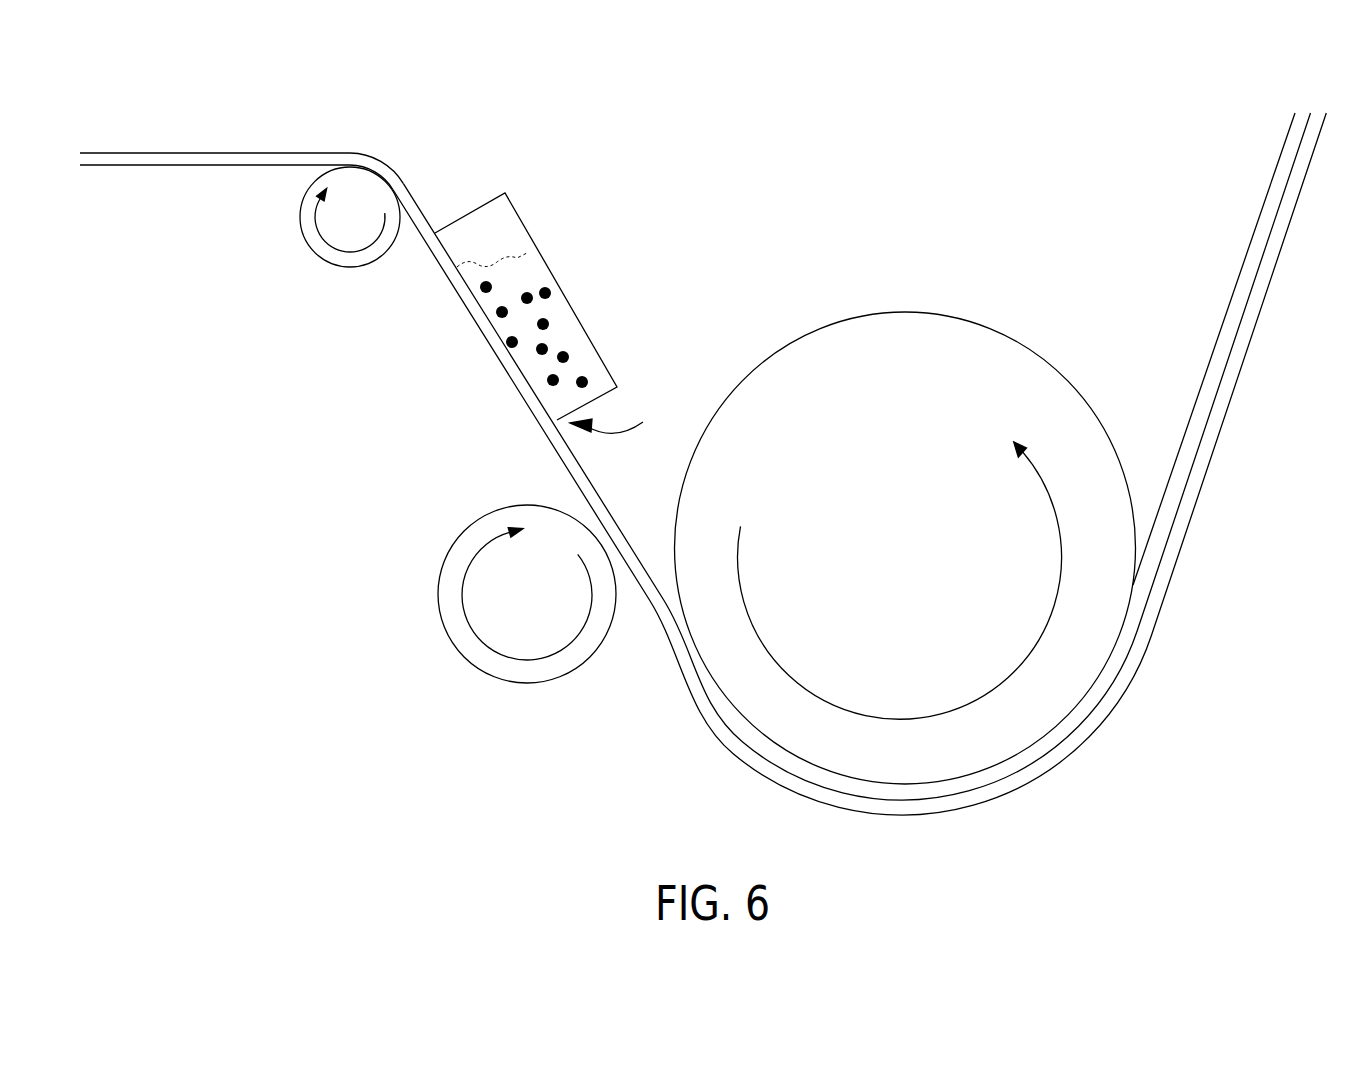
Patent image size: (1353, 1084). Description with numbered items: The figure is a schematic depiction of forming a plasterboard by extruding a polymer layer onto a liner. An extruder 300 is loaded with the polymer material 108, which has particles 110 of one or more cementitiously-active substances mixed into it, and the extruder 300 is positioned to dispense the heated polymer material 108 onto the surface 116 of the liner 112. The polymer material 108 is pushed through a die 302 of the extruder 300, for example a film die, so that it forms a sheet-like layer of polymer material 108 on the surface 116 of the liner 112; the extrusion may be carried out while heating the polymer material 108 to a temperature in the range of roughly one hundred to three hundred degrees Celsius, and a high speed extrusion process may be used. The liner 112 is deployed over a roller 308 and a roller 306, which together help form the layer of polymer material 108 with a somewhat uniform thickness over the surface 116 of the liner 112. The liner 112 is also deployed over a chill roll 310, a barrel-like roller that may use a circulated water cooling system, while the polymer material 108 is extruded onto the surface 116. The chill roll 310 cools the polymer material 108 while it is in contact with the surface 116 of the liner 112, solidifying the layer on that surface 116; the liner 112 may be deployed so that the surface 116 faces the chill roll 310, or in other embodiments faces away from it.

The polymer material 108 is at (517, 254).
The particles 110 is at (565, 353).
The liner 112 is at (250, 160).
The surface 116 is at (348, 152).
The extruder 300 is at (482, 207).
The die 302 is at (631, 412).
The roller 306 is at (553, 605).
The roller 308 is at (378, 227).
The chill roll 310 is at (928, 589).